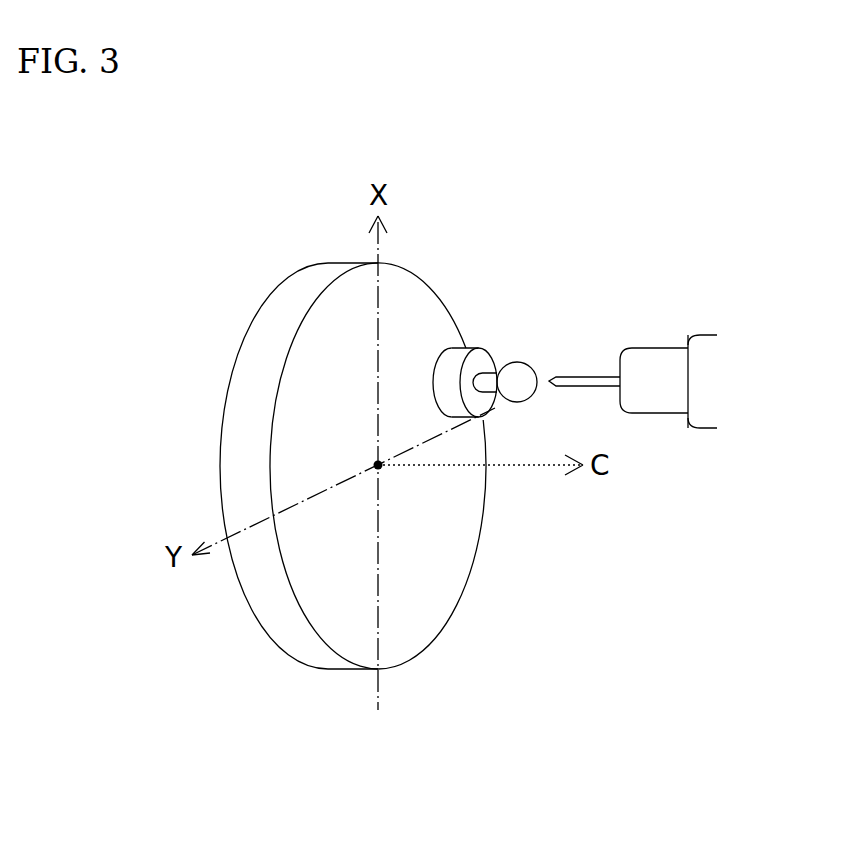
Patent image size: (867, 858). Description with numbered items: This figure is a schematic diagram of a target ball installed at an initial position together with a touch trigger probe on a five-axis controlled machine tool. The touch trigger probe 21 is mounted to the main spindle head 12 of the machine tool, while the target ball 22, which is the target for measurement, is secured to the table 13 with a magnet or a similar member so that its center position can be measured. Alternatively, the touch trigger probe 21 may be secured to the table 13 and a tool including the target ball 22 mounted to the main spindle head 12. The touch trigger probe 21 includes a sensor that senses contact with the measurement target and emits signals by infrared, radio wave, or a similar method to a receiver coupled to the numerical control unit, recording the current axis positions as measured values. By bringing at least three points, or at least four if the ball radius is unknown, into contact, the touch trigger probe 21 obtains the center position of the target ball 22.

The main spindle head 12 is at (710, 333).
The table 13 is at (317, 658).
The touch trigger probe 21 is at (592, 377).
The target ball 22 is at (521, 372).